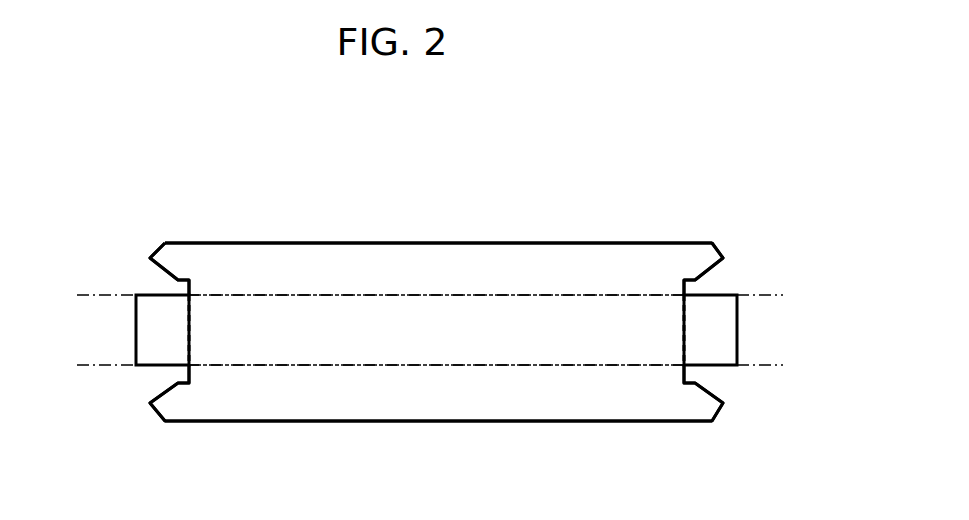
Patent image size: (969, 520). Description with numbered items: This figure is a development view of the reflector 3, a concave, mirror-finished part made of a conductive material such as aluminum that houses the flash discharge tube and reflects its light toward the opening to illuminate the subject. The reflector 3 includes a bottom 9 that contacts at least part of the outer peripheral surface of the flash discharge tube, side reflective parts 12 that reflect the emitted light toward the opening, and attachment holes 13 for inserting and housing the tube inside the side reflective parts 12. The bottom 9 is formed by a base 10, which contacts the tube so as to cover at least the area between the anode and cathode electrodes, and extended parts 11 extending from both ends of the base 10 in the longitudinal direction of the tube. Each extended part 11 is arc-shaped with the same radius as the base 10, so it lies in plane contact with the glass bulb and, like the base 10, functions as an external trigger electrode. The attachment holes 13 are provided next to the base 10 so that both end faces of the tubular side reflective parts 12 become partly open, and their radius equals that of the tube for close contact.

The reflector 3 is at (742, 223).
The bottom 9 is at (532, 158).
The base 10 is at (426, 328).
The extended part 11 is at (167, 336).
The side reflective part 12 is at (243, 262).
The attachment hole 13 is at (186, 291).